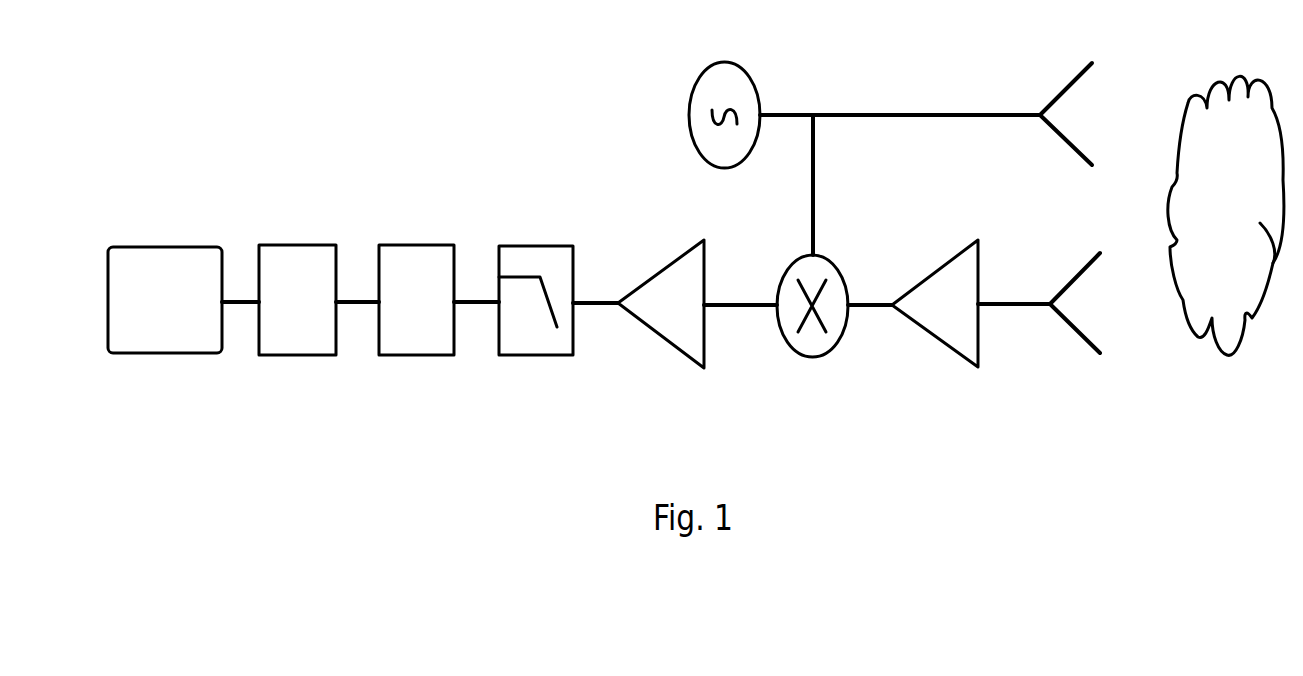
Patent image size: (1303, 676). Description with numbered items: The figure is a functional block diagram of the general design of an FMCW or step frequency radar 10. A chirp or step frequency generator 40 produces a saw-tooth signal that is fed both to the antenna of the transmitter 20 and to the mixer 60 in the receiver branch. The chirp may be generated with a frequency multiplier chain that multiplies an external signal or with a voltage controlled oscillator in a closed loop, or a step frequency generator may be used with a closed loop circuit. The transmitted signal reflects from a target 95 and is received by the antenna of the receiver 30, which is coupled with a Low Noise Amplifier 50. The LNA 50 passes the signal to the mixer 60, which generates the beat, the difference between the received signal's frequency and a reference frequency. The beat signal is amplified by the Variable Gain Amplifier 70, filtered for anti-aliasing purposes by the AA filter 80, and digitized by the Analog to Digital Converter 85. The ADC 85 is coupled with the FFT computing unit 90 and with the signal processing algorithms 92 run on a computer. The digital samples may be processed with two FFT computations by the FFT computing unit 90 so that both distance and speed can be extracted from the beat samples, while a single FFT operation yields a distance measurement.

The radar 10 is at (516, 55).
The transmitter 20 is at (1053, 97).
The receiver 30 is at (1072, 275).
The chirp or step frequency generator 40 is at (695, 82).
The Low Noise Amplifier (LNA) 50 is at (978, 347).
The mixer 60 is at (828, 258).
The Variable Gain Amplifier (VGA) 70 is at (668, 263).
The Anti-Aliasing (AA) filter 80 is at (540, 246).
The Analog to Digital Converter (ADC) 85 is at (423, 245).
The Fast Fourier Transform (FFT) computing unit 90 is at (306, 245).
The signal processing algorithms 92 is at (168, 246).
The target 95 is at (1188, 102).